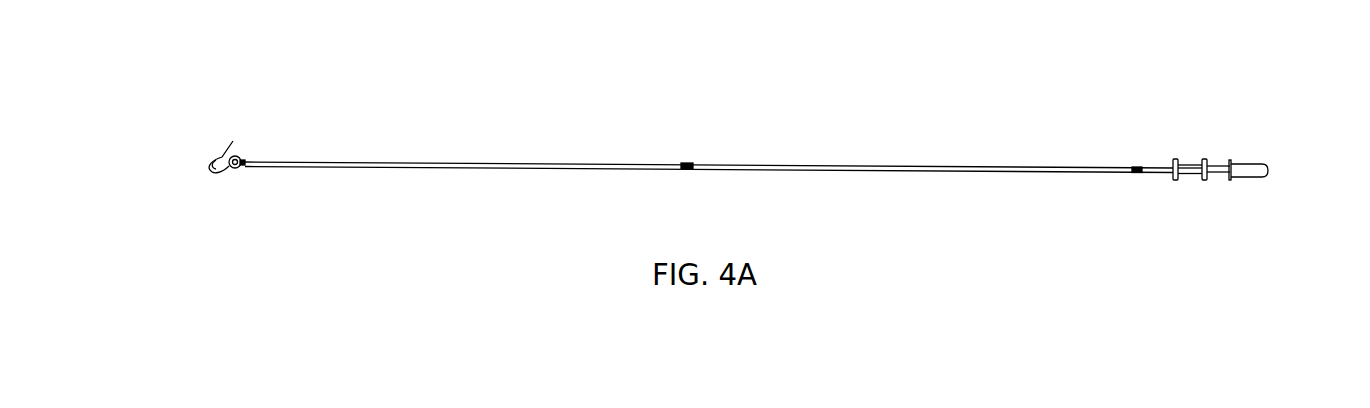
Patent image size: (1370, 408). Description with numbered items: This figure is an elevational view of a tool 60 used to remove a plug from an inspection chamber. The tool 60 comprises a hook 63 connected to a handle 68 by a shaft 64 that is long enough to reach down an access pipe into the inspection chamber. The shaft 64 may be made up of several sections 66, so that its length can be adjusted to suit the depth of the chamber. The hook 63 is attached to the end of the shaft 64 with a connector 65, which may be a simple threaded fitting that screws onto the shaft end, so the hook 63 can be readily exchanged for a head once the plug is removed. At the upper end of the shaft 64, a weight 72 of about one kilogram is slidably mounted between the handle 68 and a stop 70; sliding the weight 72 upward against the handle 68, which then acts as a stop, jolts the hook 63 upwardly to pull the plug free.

The tool 60 is at (457, 138).
The hook 63 is at (223, 145).
The shaft 64 is at (493, 160).
The connector 65 is at (243, 166).
The sections 66 is at (402, 167).
The handle 68 is at (1243, 165).
The stop 70 is at (1136, 165).
The weight 72 is at (1188, 174).